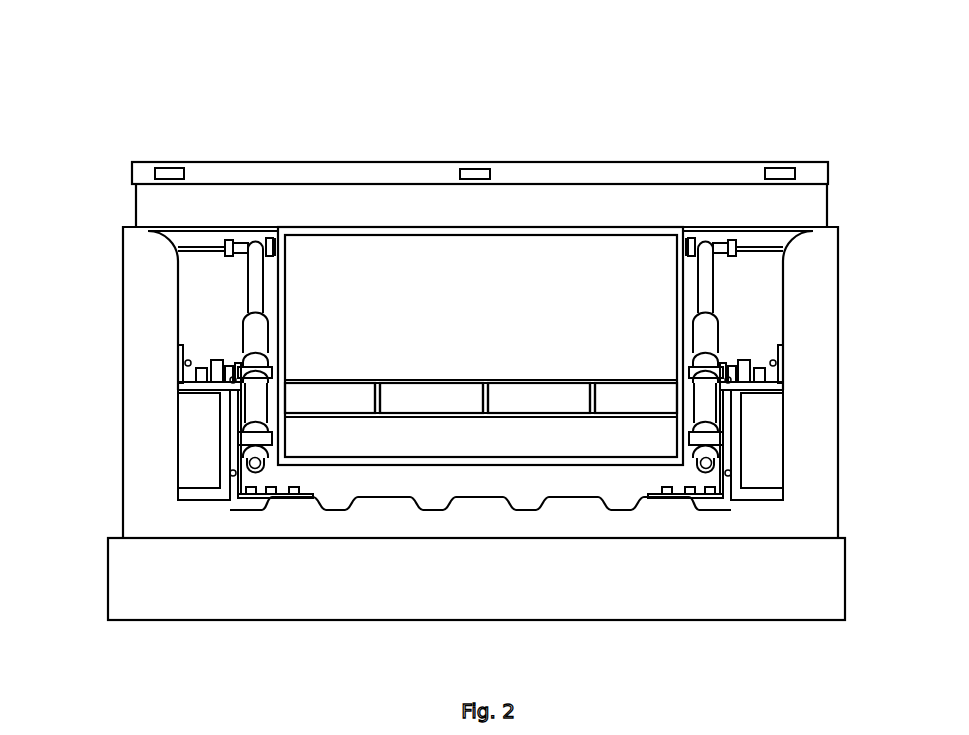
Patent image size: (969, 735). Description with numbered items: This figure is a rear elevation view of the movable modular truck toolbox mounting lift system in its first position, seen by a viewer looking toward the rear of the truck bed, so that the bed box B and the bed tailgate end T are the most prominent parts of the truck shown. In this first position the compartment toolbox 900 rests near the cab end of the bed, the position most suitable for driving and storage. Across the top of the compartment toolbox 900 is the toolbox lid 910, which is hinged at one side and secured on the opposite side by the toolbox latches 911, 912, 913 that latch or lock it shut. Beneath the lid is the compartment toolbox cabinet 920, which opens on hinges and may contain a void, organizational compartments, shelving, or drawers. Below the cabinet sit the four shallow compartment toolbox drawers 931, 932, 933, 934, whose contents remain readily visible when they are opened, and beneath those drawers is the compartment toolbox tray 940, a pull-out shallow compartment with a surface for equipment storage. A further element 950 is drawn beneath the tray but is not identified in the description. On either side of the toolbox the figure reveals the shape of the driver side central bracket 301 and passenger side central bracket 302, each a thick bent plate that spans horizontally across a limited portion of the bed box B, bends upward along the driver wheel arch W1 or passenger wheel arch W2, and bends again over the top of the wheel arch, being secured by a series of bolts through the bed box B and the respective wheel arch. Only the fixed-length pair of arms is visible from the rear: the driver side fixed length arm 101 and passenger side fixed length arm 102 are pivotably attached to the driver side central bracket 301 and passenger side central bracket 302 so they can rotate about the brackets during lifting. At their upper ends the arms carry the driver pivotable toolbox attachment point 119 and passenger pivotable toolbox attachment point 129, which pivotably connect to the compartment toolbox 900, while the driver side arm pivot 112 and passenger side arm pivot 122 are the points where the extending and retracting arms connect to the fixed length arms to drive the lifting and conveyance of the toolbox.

The compartment toolbox 900 is at (645, 160).
The toolbox lid 910 is at (330, 175).
The toolbox latch 911 is at (169, 168).
The toolbox latch 912 is at (477, 169).
The toolbox latch 913 is at (780, 168).
The compartment toolbox cabinet 920 is at (462, 322).
The compartment toolbox drawer 931 is at (345, 400).
The compartment toolbox drawer 932 is at (433, 400).
The compartment toolbox drawer 933 is at (515, 400).
The compartment toolbox drawer 934 is at (630, 400).
The compartment toolbox tray 940 is at (454, 444).
The bottom plate 950 is at (460, 468).
The driver side fixed length arm 101 is at (253, 287).
The passenger side fixed length arm 102 is at (705, 287).
The driver pivotable toolbox attachment point 119 is at (225, 241).
The passenger pivotable toolbox attachment point 129 is at (733, 243).
The driver side arm pivot 112 is at (213, 363).
The passenger side arm pivot 122 is at (740, 366).
The driver side central bracket 301 is at (267, 498).
The passenger side central bracket 302 is at (702, 500).
The driver wheel arch W1 is at (197, 453).
The passenger wheel arch W2 is at (763, 447).
The bed box B is at (380, 529).
The bed tailgate end T is at (805, 447).